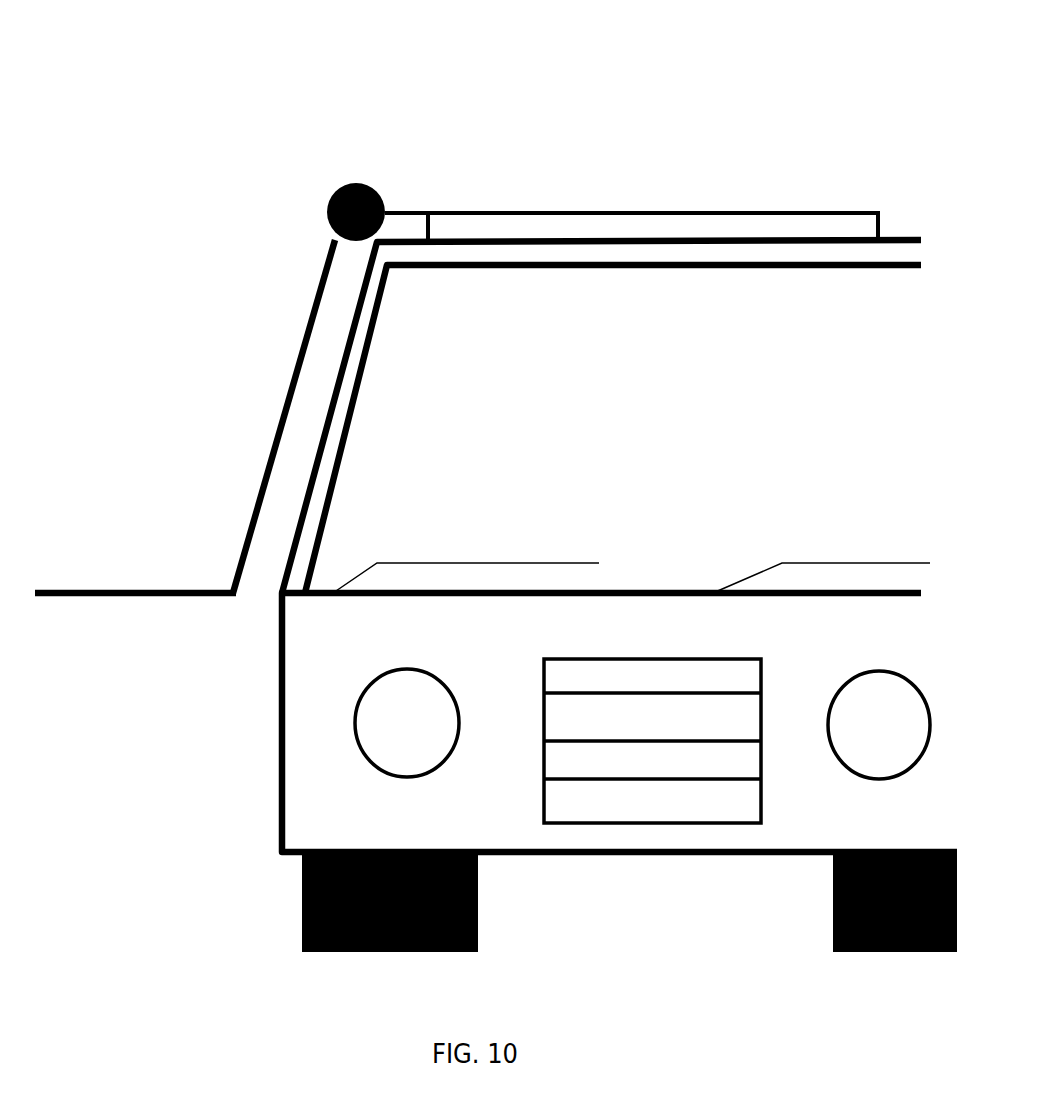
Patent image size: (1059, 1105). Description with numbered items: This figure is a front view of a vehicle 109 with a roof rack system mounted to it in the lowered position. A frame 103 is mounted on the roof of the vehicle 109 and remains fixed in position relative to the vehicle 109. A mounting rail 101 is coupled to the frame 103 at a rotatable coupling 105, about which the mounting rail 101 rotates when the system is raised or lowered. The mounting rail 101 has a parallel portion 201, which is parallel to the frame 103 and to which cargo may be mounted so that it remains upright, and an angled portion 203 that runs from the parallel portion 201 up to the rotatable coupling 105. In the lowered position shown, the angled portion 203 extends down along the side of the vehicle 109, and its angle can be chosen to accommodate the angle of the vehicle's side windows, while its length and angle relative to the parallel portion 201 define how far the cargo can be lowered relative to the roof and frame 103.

The mounting rail 101 is at (242, 415).
The frame 103 is at (488, 212).
The rotatable coupling 105 is at (335, 193).
The vehicle 109 is at (272, 713).
The parallel portion 201 is at (137, 593).
The angled portion 203 is at (297, 353).